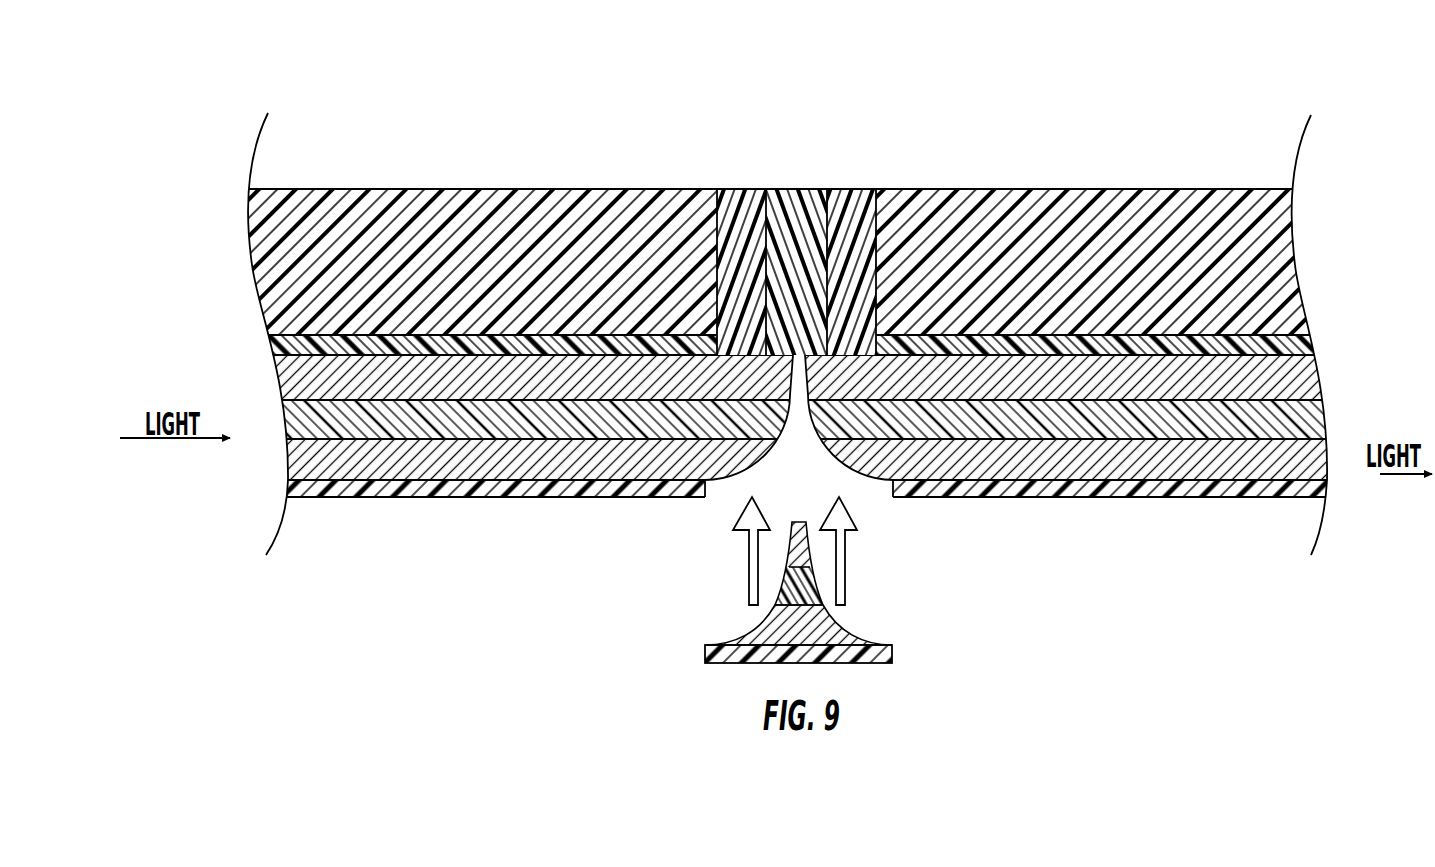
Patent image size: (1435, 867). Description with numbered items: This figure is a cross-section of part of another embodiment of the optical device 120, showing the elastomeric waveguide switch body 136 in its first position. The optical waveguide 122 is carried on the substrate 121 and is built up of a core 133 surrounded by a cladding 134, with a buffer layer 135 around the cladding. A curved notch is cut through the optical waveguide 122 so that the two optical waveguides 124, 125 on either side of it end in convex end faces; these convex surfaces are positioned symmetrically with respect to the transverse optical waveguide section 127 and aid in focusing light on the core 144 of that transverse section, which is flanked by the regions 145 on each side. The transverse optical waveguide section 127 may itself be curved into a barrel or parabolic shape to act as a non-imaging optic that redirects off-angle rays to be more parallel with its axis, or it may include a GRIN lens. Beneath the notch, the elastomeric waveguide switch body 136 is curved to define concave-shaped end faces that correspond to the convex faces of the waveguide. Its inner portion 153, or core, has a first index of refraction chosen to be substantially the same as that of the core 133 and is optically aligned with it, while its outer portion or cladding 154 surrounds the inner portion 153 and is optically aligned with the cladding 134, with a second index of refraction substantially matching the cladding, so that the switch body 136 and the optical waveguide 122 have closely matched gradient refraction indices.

The optical device 120 is at (600, 118).
The light guide plate 121 is at (422, 212).
The optical waveguide 122 is at (258, 403).
The optical waveguide 124 is at (403, 497).
The optical waveguide 125 is at (1080, 497).
The transverse optical waveguide section 127 is at (852, 224).
The core 133 is at (1310, 418).
The cladding 134 is at (1308, 380).
The reflective layer 135 is at (1313, 345).
The elastomeric waveguide switch body 136 is at (700, 654).
The core 144 is at (780, 205).
The side block 145 is at (733, 200).
The inner portion 153 is at (787, 592).
The outer portion 154 is at (800, 557).